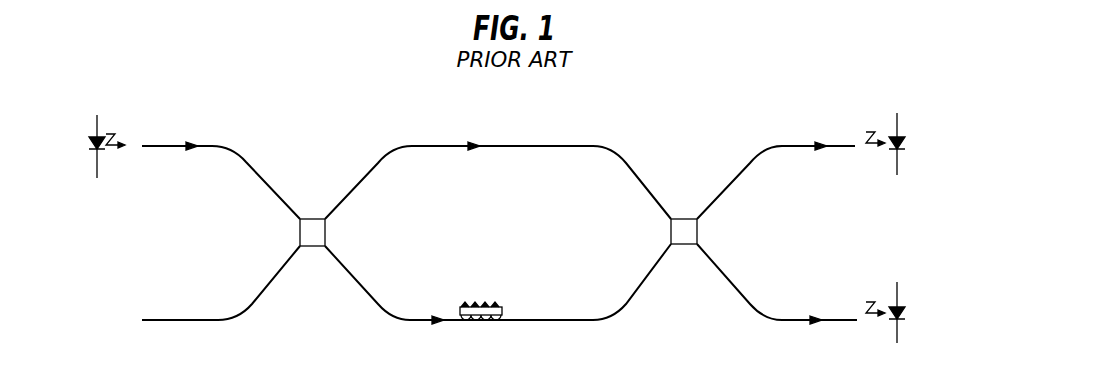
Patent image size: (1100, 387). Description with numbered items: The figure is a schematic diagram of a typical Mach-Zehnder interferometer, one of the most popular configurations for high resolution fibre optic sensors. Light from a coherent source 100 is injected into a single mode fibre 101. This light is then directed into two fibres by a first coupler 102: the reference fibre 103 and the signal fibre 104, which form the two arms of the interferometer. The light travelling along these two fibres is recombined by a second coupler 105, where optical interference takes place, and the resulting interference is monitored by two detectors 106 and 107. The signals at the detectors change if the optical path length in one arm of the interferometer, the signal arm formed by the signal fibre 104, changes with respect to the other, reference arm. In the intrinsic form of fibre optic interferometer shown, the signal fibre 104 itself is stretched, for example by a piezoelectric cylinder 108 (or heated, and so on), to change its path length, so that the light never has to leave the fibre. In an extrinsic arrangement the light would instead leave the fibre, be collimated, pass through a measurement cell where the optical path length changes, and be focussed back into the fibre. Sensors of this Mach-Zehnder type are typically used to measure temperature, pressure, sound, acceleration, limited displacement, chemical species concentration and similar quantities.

The coherent source 100 is at (102, 124).
The single mode fibre 101 is at (207, 146).
The coupler 102 is at (315, 236).
The reference fibre 103 is at (527, 146).
The signal fibre 104 is at (415, 321).
The coupler 105 is at (687, 235).
The detector 106 is at (903, 117).
The detector 107 is at (903, 287).
The piezoelectric cylinder 108 is at (503, 310).